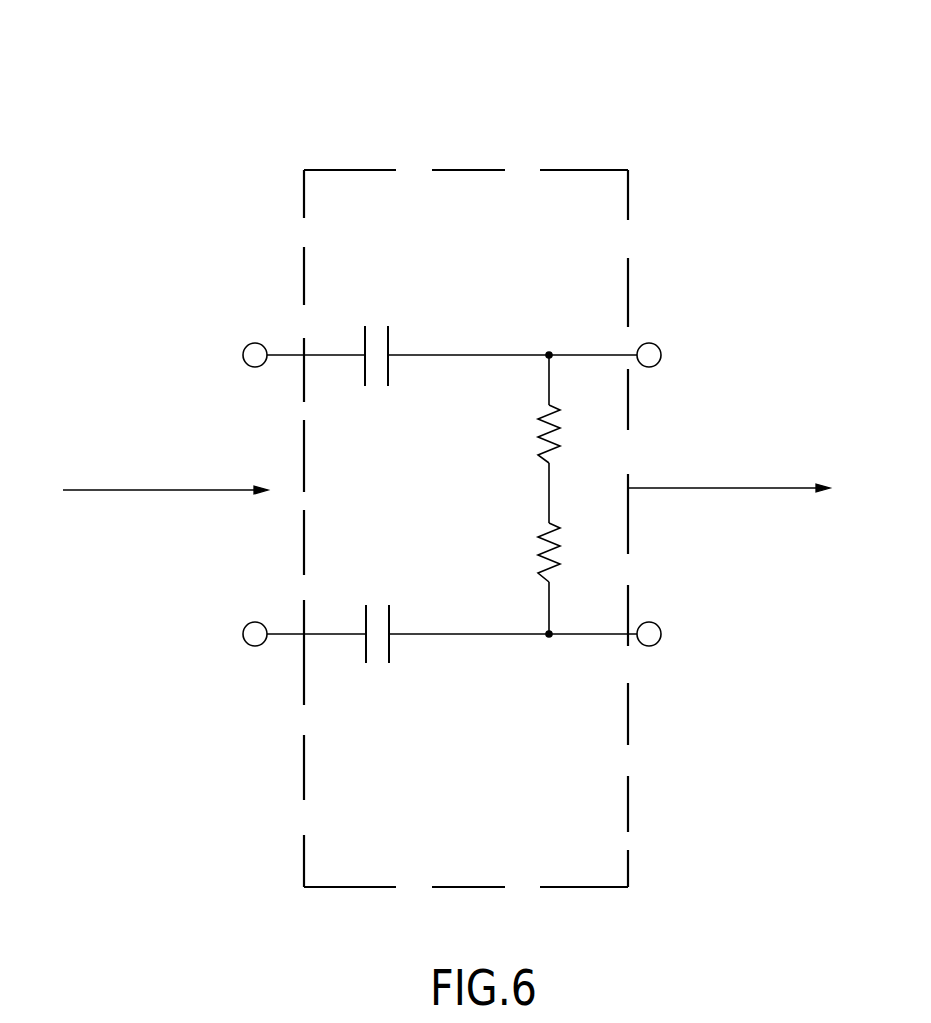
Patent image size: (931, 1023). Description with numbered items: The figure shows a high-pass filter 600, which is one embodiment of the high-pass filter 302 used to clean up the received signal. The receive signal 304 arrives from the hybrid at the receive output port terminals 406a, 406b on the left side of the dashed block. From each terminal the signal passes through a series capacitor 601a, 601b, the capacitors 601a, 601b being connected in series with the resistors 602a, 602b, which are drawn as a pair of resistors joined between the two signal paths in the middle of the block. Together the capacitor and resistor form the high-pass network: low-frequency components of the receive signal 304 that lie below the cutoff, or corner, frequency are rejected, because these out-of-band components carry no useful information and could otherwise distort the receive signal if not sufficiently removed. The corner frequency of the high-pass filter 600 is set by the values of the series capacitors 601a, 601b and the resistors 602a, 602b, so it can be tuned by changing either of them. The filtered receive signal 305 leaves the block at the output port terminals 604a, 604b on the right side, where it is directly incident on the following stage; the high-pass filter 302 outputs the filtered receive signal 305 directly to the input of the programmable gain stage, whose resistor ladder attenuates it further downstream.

The high-pass filter 302 is at (490, 110).
The high-pass filter 600 is at (340, 170).
The capacitor 601a is at (398, 282).
The capacitor 601b is at (395, 684).
The resistor 602a is at (608, 433).
The resistor 602b is at (608, 555).
The receive output port 406a is at (247, 347).
The receive output port 406b is at (248, 644).
The port 604a is at (657, 347).
The port 604b is at (657, 643).
The receive signal 304 is at (165, 473).
The filtered receive signal 305 is at (729, 472).